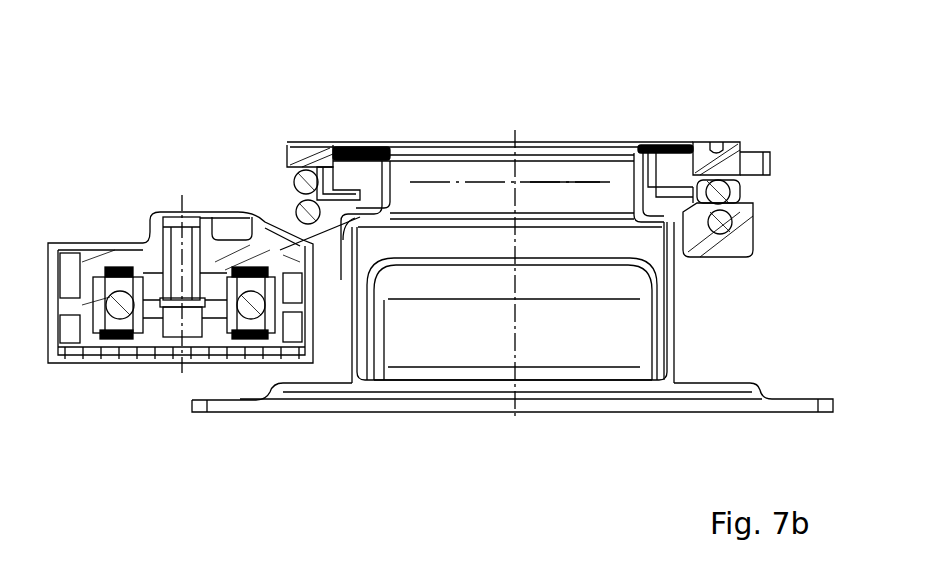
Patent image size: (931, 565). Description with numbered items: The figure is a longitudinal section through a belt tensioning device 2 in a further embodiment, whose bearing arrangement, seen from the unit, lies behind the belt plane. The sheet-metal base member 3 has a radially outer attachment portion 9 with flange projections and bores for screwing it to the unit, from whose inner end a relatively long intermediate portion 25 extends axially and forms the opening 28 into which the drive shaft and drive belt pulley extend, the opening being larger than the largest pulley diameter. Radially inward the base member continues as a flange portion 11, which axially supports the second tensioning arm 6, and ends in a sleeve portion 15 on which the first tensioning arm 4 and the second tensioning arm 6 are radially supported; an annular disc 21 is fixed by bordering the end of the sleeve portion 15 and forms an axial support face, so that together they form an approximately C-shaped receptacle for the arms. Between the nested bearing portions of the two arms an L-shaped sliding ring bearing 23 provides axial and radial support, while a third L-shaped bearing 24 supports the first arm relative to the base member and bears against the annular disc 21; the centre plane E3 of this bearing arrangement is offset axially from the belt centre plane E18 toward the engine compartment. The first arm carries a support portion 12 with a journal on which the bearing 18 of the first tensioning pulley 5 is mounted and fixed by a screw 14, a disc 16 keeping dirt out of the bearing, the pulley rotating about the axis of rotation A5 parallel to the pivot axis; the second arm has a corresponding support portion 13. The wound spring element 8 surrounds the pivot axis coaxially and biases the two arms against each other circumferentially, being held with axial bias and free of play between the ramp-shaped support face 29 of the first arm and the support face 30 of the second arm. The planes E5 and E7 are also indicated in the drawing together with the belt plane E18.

The belt tensioning device 2 is at (241, 96).
The base member 3 is at (680, 347).
The first tensioning arm 4 is at (757, 247).
The first tensioning pulley 5 is at (47, 242).
The second tensioning arm 6 is at (718, 141).
The spring element 8 is at (731, 188).
The attachment portion 9 is at (707, 384).
The flange portion 11 is at (677, 248).
The support portion 12 is at (128, 258).
The support portion 13 is at (521, 347).
The screw 14 is at (197, 334).
The sleeve portion 15 is at (622, 176).
The disc 16 is at (133, 362).
The bearing 18 is at (105, 362).
The annular disc 21 is at (663, 142).
The bearing 23 is at (366, 190).
The third bearing 24 is at (644, 192).
The intermediate portion 25 is at (675, 317).
The opening 28 is at (399, 357).
The support face 29 is at (733, 222).
The support face 30 is at (294, 181).
The axis of rotation A5 is at (163, 216).
The centre plane E3 is at (564, 182).
The plane E5 is at (462, 410).
The plane E7 is at (462, 410).
The centre plane E18 is at (276, 345).